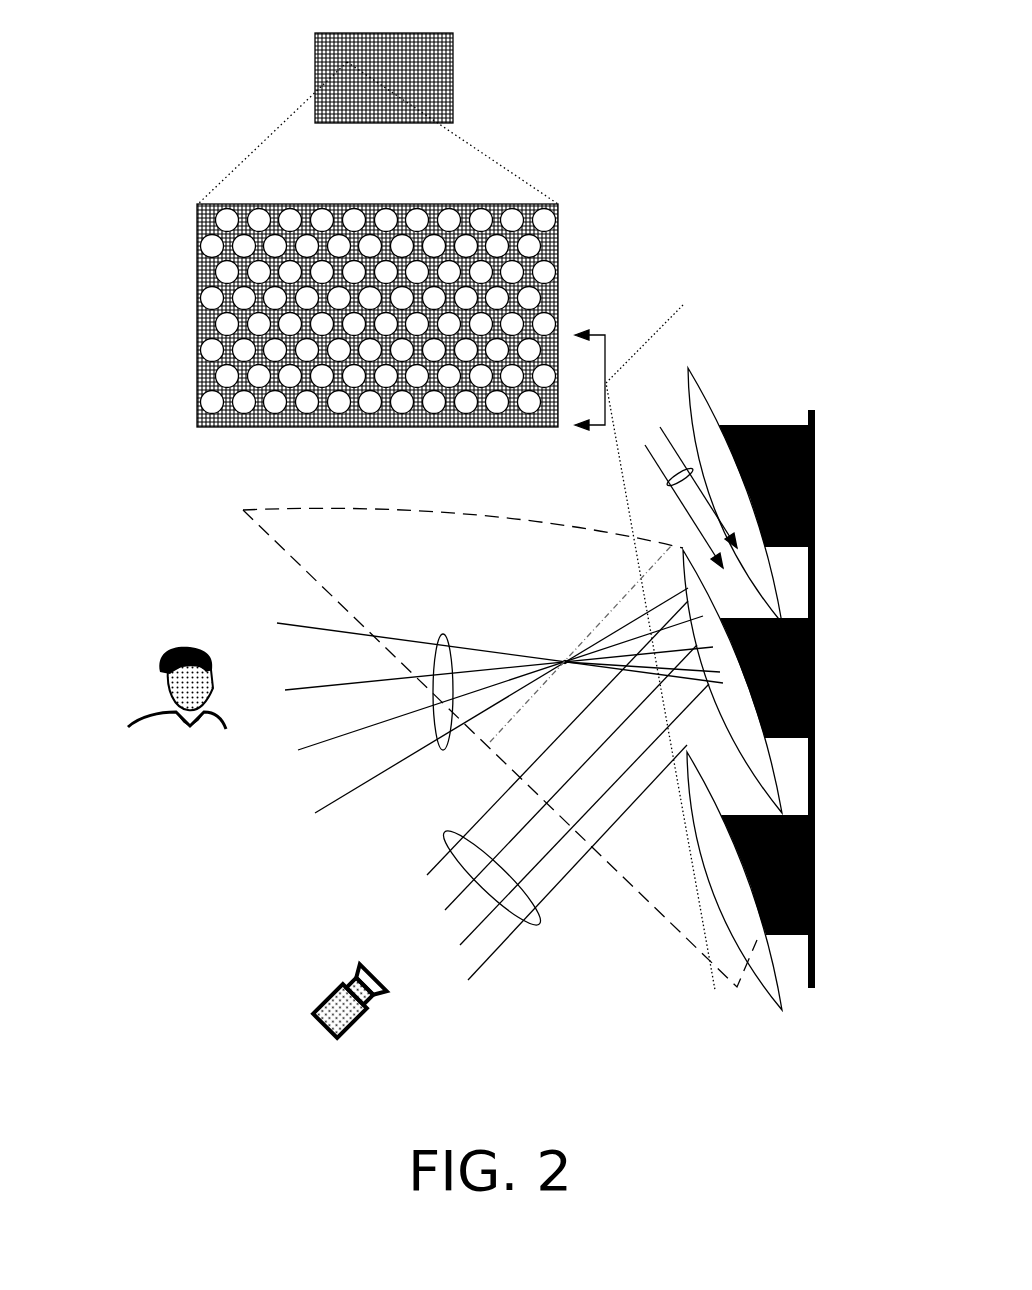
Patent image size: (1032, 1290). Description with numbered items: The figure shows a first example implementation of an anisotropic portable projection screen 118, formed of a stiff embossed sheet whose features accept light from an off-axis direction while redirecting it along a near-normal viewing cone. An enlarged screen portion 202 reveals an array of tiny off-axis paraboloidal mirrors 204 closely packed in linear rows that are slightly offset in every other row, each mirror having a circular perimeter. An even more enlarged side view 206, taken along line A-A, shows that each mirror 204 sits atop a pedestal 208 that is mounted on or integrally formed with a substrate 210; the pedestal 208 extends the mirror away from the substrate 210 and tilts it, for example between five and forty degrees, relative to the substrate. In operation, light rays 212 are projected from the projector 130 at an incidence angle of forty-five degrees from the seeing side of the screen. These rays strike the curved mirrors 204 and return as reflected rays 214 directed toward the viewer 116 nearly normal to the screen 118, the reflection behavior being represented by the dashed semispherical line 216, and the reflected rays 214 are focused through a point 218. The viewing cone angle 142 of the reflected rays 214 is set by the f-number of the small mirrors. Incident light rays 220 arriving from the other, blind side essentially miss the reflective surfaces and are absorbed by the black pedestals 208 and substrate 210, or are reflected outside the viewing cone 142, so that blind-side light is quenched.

The portable projection screen 118 is at (378, 110).
The screen portion 202 is at (197, 225).
The off-axis paraboloidal mirrors 204 is at (676, 607).
The side view 206 is at (793, 1113).
The pedestal 208 is at (782, 654).
The substrate 210 is at (719, 621).
The light rays 212 is at (568, 790).
The reflected rays 214 is at (409, 672).
The dashed semispherical line 216 is at (426, 731).
The point 218 is at (581, 643).
The light rays 220 is at (668, 490).
The viewing cone angle 142 is at (500, 700).
The viewer 116 is at (205, 738).
The projector 130 is at (321, 1017).